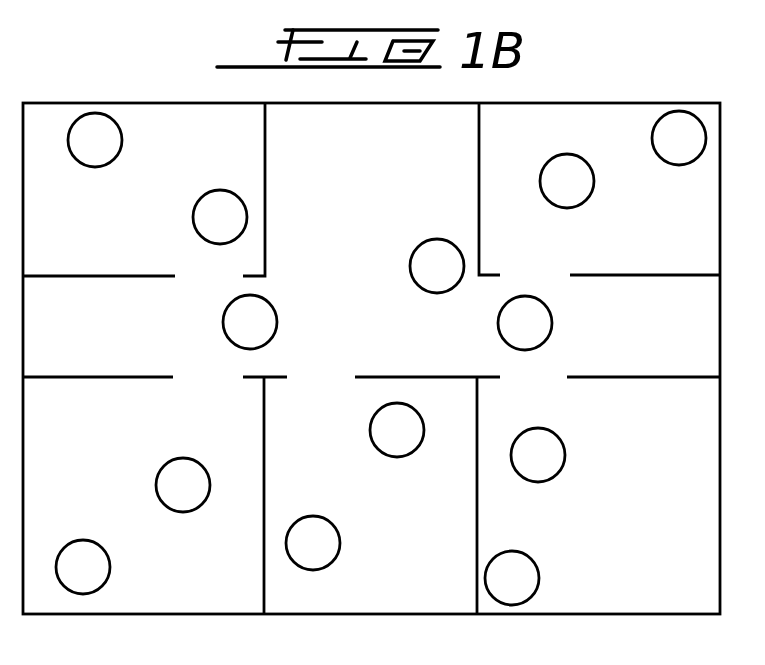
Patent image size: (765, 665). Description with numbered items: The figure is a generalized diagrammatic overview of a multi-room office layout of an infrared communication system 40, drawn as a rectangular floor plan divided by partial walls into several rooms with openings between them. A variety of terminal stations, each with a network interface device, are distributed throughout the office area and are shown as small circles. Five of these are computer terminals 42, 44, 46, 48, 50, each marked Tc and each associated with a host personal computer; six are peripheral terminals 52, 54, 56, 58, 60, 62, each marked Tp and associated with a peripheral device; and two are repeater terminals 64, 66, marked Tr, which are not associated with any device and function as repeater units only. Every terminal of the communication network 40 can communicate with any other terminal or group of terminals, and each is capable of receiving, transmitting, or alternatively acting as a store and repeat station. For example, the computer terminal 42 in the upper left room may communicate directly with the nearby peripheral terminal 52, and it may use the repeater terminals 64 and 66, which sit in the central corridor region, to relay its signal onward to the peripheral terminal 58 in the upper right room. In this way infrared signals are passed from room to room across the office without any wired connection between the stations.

The infrared communication system 40 is at (383, 157).
The computer terminal 42 is at (122, 144).
The computer terminal 44 is at (210, 487).
The computer terminal 46 is at (424, 432).
The computer terminal 48 is at (652, 141).
The computer terminal 50 is at (565, 457).
The peripheral terminal 52 is at (194, 213).
The peripheral terminal 54 is at (110, 569).
The peripheral terminal 56 is at (340, 545).
The peripheral terminal 58 is at (594, 184).
The peripheral terminal 60 is at (539, 580).
The peripheral terminal 62 is at (412, 257).
The repeater terminal 64 is at (277, 324).
The repeater terminal 66 is at (552, 325).